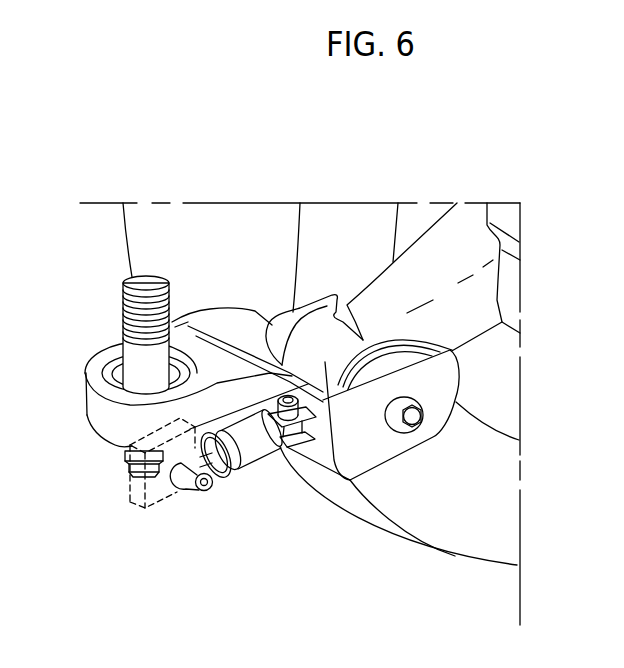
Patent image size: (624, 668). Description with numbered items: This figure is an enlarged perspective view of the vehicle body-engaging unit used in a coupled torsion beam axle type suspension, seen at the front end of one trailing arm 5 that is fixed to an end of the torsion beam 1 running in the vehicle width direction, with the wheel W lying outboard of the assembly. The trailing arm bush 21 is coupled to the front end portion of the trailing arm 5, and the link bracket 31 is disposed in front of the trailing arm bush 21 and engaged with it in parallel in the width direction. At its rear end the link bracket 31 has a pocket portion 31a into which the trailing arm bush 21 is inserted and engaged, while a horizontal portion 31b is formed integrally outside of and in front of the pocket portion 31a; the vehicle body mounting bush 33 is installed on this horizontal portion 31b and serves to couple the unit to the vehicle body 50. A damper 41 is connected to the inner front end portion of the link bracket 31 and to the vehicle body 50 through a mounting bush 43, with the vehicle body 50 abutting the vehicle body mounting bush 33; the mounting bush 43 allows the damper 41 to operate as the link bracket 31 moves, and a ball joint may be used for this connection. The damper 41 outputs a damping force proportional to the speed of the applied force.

The torsion beam 1 is at (512, 289).
The trailing arm 5 is at (443, 255).
The trailing arm bush 21 is at (337, 420).
The link bracket 31 is at (224, 300).
The pocket portion 31a is at (278, 312).
The horizontal portion 31b is at (188, 343).
The vehicle body mounting bush 33 is at (112, 366).
The damper 41 is at (262, 465).
The mounting bush 43 is at (178, 490).
The vehicle body 50 is at (130, 487).
The wheel W is at (445, 518).